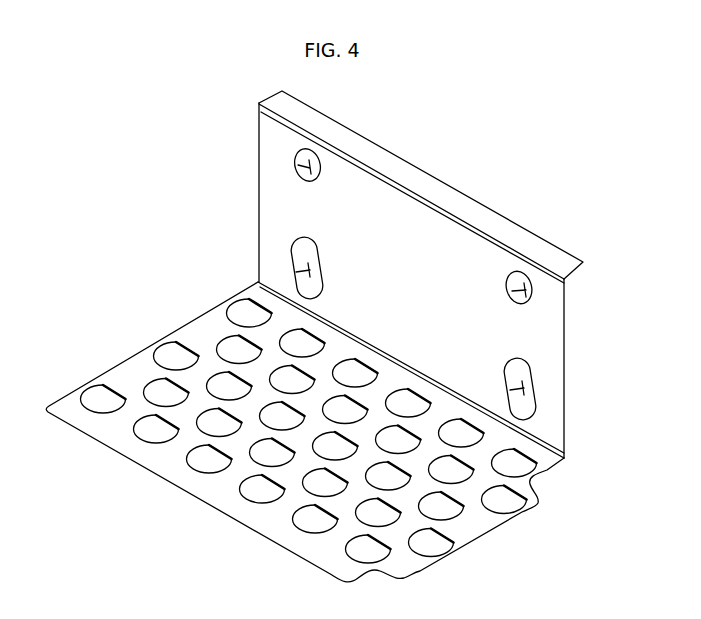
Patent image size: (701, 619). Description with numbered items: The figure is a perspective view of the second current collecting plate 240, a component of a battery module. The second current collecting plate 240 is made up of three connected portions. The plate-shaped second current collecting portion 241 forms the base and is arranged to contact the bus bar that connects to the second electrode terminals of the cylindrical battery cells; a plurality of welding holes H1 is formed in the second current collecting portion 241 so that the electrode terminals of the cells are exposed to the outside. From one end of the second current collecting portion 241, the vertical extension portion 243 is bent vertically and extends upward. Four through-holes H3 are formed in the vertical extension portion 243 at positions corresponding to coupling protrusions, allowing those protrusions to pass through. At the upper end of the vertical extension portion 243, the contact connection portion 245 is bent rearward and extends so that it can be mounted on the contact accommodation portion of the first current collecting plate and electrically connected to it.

The second current collecting plate 240 is at (335, 336).
The second current collecting portion 241 is at (162, 461).
The vertical extension portion 243 is at (552, 418).
The contact connection portion 245 is at (437, 190).
The welding holes H1 is at (168, 394).
The through-holes H3 is at (303, 264).